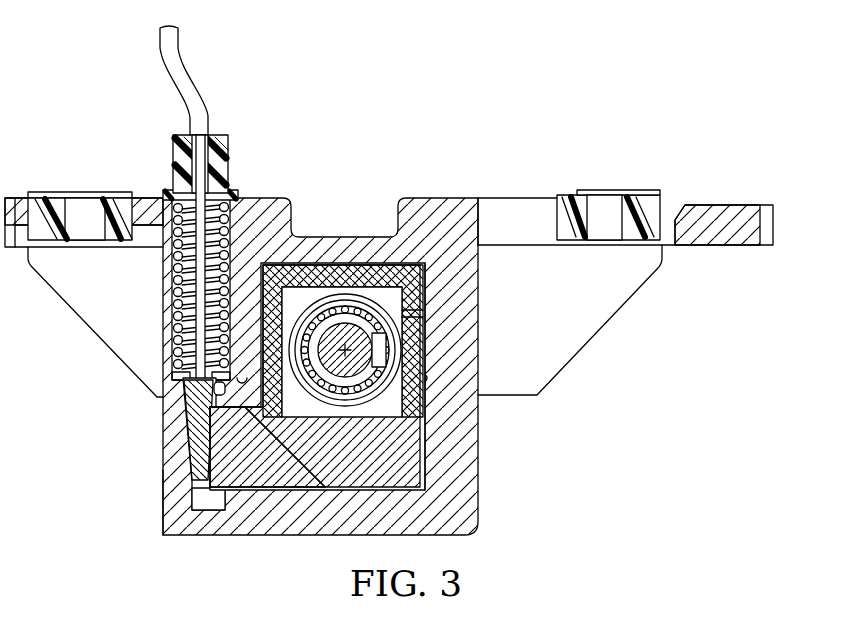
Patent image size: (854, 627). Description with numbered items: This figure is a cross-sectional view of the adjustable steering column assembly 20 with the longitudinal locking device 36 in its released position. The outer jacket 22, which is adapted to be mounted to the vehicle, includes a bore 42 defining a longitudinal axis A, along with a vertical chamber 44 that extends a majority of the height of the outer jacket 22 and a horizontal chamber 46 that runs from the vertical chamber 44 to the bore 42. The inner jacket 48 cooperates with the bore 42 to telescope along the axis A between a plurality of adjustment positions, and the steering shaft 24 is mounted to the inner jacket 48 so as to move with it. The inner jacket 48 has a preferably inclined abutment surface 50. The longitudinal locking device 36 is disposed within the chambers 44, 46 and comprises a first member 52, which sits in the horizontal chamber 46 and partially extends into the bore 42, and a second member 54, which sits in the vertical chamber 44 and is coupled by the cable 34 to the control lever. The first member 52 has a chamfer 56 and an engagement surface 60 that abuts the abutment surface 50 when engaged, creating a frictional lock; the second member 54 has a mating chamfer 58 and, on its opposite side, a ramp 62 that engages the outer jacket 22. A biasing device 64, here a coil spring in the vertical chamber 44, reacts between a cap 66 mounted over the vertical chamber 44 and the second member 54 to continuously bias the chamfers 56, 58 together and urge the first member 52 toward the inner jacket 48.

The adjustable steering column assembly 20 is at (486, 135).
The outer jacket 22 is at (467, 503).
The steering shaft 24 is at (345, 323).
The cable 34 is at (193, 84).
The longitudinal locking device 36 is at (180, 470).
The bore 42 is at (425, 377).
The vertical chamber 44 is at (175, 328).
The horizontal chamber 46 is at (240, 373).
The inner jacket 48 is at (398, 487).
The abutment surface 50 is at (265, 478).
The first member 52 is at (292, 462).
The second member 54 is at (190, 417).
The chamfer 56 is at (207, 488).
The chamfer 58 is at (213, 388).
The engagement surface 60 is at (248, 405).
The ramp 62 is at (182, 445).
The biasing device 64 is at (180, 270).
The cap 66 is at (224, 158).
The longitudinal axis A is at (367, 330).